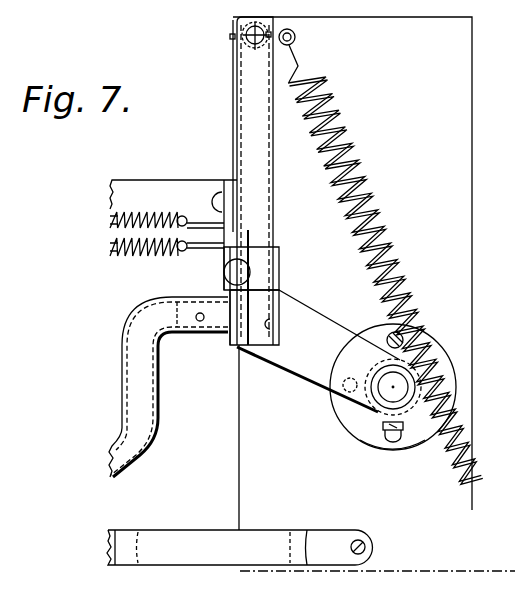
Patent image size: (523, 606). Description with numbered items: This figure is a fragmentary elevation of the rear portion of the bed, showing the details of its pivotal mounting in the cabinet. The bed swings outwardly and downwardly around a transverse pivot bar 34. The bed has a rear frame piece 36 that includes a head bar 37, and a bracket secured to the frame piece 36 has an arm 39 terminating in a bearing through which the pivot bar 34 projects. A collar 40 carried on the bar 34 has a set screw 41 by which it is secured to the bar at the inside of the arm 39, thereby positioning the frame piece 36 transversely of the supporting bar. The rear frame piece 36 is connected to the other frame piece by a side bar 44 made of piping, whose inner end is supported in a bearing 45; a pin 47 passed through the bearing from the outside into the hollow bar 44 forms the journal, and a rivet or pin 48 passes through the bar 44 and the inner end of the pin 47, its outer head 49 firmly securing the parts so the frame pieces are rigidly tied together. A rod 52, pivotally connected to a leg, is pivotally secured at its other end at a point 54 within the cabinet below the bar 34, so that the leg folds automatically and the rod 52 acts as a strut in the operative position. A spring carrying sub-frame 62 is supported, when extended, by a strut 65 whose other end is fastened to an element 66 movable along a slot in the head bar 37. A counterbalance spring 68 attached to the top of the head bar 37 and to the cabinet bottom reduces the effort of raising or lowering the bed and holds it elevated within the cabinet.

The transverse pivot bar 34 is at (388, 397).
The rear frame piece 36 is at (222, 256).
The head bar 37 is at (266, 221).
The arm 39 is at (313, 367).
The collar 40 is at (404, 419).
The set screw 41 is at (393, 454).
The side bar 44 is at (140, 410).
The bearing 45 is at (256, 344).
The pin 47 is at (178, 314).
The rivet or pin 48 is at (200, 322).
The head 49 is at (272, 325).
The rod 52 is at (192, 537).
The pivotal securing point 54 is at (366, 521).
The spring carrying sub-frame 62 is at (214, 212).
The strut 65 is at (238, 86).
The element 66 is at (256, 44).
The spring 68 is at (384, 208).